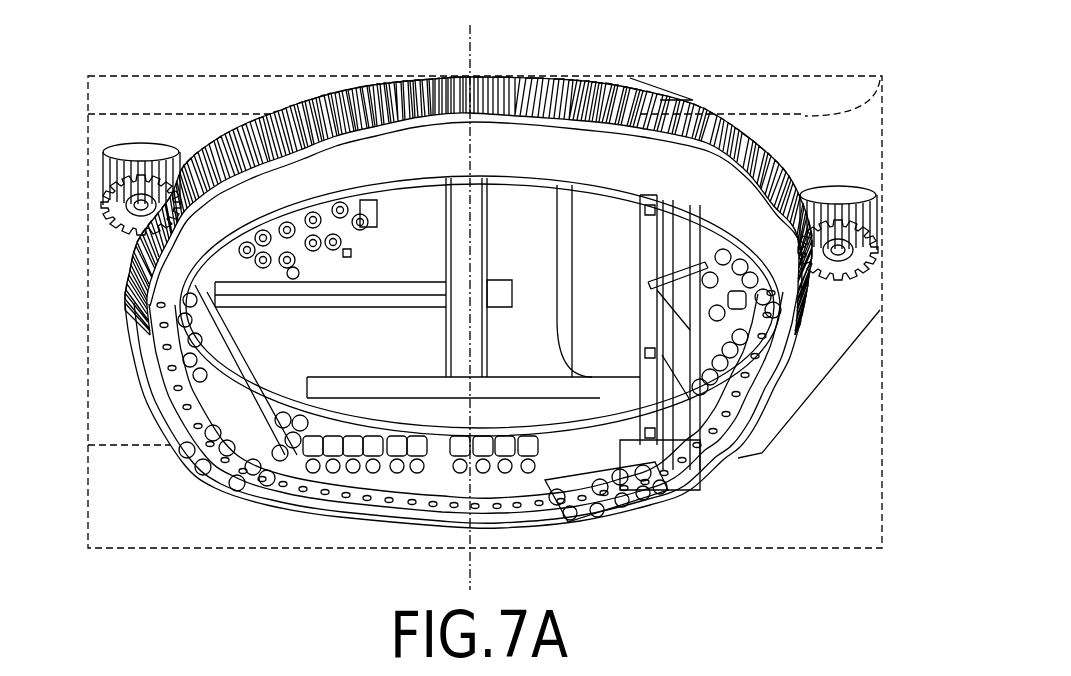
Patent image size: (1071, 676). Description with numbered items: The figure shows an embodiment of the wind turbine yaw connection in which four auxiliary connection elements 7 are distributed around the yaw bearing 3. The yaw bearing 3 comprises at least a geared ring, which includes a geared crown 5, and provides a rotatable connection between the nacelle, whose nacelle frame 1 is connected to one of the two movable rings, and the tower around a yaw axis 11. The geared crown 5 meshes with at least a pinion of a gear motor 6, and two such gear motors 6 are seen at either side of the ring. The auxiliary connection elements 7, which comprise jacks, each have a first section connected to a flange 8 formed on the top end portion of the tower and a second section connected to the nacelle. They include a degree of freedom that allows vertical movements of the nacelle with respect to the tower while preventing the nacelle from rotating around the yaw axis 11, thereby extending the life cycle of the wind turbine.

The nacelle frame 1 is at (760, 135).
The yaw bearing 3 is at (297, 207).
The geared crown 5 is at (272, 116).
The gear motor 6 is at (141, 150).
The auxiliary connection element 7 is at (777, 287).
The flange 8 is at (167, 390).
The yaw axis 11 is at (473, 47).